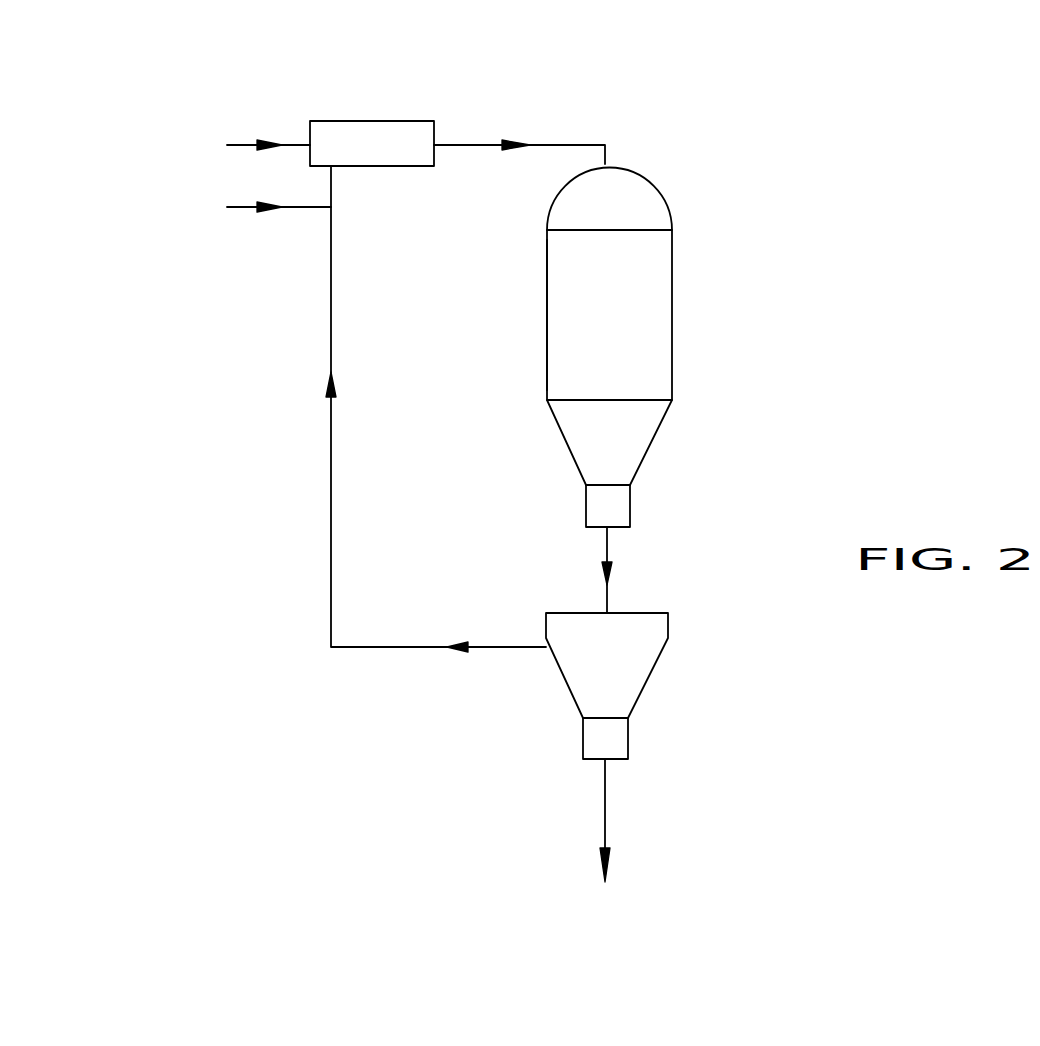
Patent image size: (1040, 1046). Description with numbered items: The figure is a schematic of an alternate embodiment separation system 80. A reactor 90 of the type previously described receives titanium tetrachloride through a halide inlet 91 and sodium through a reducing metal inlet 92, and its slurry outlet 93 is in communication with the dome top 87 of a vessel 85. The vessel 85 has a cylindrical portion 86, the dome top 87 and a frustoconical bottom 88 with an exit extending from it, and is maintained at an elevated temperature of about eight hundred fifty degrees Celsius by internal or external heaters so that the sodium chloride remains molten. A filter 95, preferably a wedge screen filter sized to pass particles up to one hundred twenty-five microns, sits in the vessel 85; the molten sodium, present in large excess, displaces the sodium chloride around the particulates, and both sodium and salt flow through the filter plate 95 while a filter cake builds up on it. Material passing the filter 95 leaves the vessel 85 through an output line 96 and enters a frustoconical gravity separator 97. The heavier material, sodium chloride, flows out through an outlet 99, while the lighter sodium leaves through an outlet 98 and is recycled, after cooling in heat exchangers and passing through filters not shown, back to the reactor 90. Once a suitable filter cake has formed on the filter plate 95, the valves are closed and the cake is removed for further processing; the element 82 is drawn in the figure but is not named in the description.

The separation system 80 is at (305, 43).
The valve 82 is at (632, 503).
The vessel 85 is at (634, 251).
The cylindrical portion 86 is at (548, 310).
The dome top 87 is at (627, 172).
The frustoconical bottom 88 is at (565, 443).
The reactor 90 is at (385, 120).
The halide inlet 91 is at (245, 147).
The reducing metal inlet 92 is at (242, 207).
The slurry outlet 93 is at (560, 146).
The filter 95 is at (603, 398).
The output line 96 is at (607, 582).
The gravity separator 97 is at (653, 683).
The outlet 98 is at (502, 648).
The outlet 99 is at (605, 828).